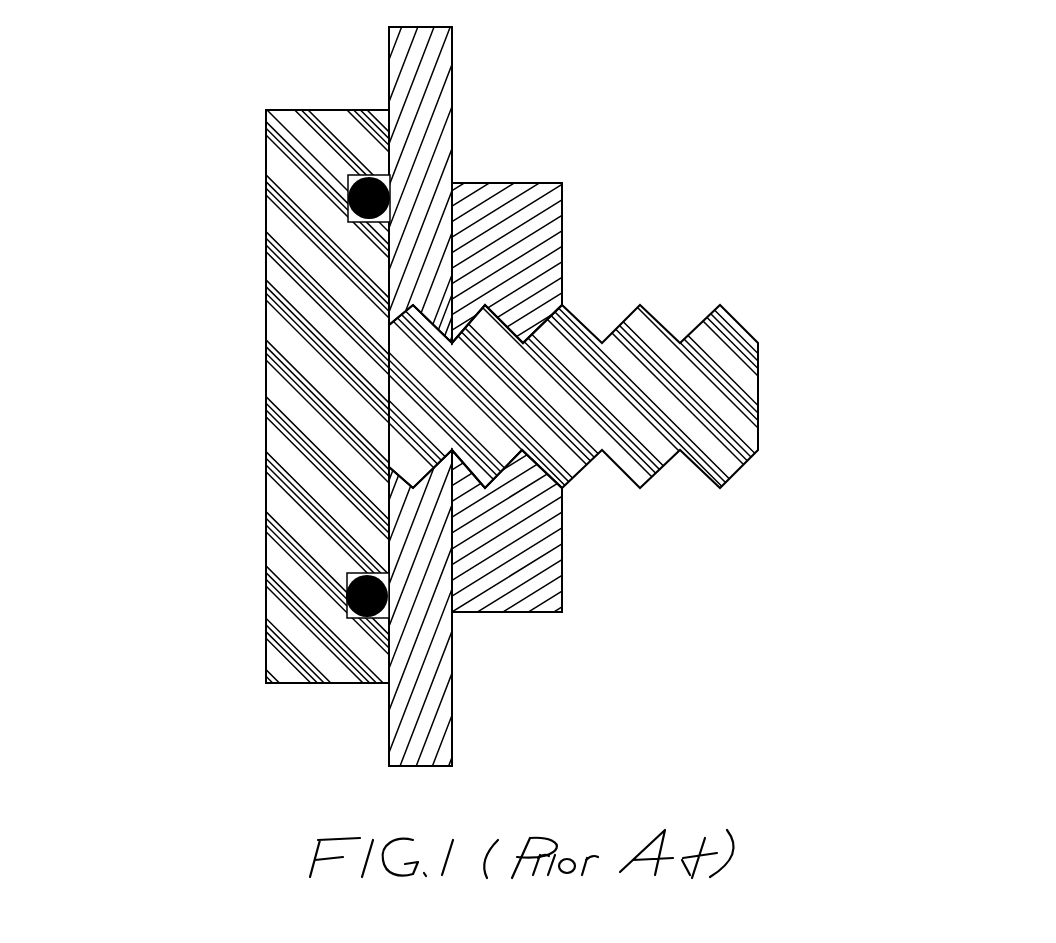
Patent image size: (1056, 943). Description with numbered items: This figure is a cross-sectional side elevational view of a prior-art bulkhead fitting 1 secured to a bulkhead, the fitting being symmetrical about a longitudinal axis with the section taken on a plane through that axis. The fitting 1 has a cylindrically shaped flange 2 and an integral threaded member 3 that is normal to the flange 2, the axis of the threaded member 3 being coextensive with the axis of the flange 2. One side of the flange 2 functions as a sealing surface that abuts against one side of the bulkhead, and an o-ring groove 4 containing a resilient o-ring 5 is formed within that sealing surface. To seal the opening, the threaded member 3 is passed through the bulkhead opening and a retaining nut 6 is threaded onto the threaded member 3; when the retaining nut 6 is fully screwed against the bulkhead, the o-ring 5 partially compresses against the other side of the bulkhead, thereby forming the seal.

The fitting 1 is at (528, 471).
The flange 2 is at (263, 652).
The threaded member 3 is at (657, 473).
The o-ring groove 4 is at (348, 617).
The o-ring 5 is at (348, 598).
The retaining nut 6 is at (562, 585).